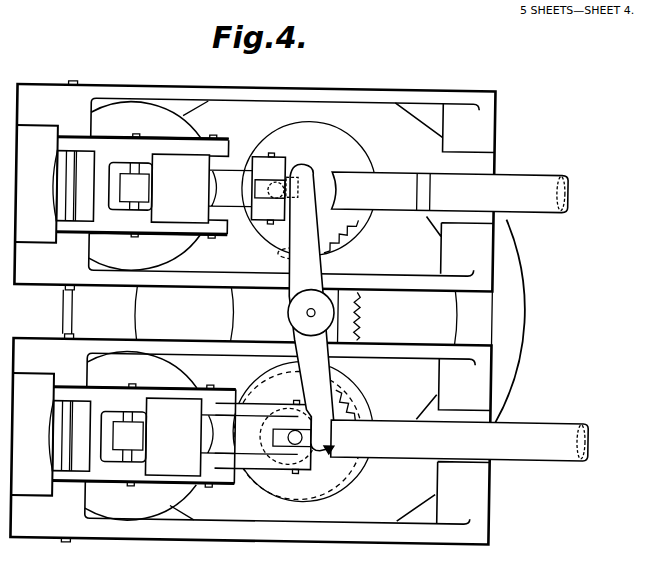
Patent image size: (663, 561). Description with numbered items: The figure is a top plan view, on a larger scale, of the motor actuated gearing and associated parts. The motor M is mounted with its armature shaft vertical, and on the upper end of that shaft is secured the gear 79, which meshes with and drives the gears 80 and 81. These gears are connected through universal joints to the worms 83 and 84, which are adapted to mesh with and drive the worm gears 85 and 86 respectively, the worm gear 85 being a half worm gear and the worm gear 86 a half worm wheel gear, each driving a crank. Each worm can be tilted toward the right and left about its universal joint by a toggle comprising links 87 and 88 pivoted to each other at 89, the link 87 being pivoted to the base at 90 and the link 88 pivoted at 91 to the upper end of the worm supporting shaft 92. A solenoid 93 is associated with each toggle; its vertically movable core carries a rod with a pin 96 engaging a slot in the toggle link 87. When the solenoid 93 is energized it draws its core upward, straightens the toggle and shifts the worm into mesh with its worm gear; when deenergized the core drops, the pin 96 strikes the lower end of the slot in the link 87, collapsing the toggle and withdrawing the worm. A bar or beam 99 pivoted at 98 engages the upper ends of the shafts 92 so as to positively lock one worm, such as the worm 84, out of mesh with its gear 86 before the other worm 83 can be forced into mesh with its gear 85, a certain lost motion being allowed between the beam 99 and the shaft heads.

The gear 79 is at (348, 306).
The gear 80 is at (344, 397).
The gear 81 is at (337, 218).
The worm 83 is at (333, 447).
The worm 84 is at (300, 160).
The worm gear 85 is at (575, 433).
The worm gear 86 is at (545, 190).
The toggle link 87 is at (167, 466).
The toggle link 88 is at (263, 463).
The pivot 89 is at (224, 485).
The pivot 90 is at (67, 424).
The pivot 91 is at (296, 468).
The worm supporting shaft 92 is at (288, 433).
The solenoid 93 is at (125, 500).
The pin 96 is at (128, 384).
The pivot 98 is at (308, 309).
The bar or beam 99 is at (333, 367).
The motor M is at (523, 322).